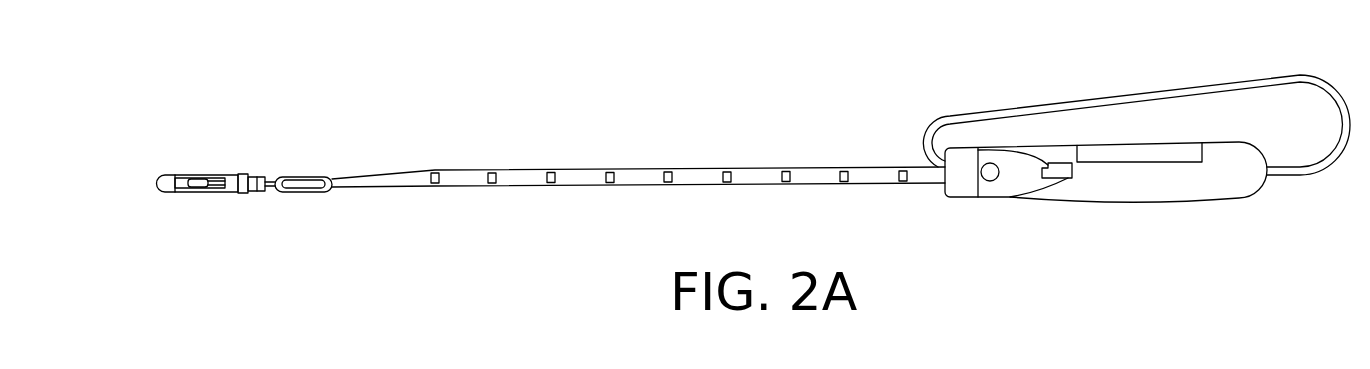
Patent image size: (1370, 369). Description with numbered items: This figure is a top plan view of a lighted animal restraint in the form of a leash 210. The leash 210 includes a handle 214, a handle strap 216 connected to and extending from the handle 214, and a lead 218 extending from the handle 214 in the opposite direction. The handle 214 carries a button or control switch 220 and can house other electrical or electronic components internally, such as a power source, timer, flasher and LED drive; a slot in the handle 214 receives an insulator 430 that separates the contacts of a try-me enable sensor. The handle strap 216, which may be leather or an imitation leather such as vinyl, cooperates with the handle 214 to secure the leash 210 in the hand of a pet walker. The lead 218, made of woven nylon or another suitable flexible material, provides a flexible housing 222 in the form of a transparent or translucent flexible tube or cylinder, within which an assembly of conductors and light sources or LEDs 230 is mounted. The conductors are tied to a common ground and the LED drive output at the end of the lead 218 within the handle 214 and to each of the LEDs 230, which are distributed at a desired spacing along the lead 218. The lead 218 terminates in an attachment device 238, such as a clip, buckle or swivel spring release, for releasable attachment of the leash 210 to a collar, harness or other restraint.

The leash 210 is at (546, 110).
The handle 214 is at (1128, 203).
The handle strap 216 is at (1090, 99).
The lead 218 is at (448, 188).
The button or control switch 220 is at (990, 182).
The flexible housing 222 is at (640, 186).
The light sources or LEDs 230 is at (433, 172).
The attachment device 238 is at (183, 178).
The insulator 430 is at (1060, 179).